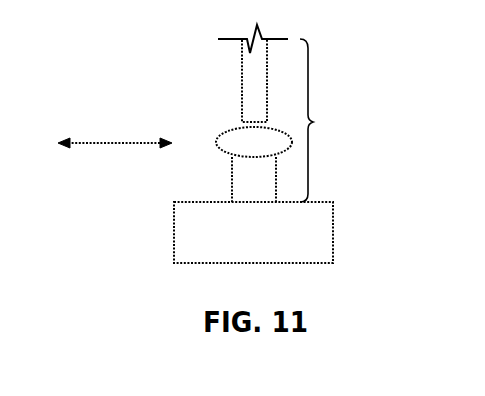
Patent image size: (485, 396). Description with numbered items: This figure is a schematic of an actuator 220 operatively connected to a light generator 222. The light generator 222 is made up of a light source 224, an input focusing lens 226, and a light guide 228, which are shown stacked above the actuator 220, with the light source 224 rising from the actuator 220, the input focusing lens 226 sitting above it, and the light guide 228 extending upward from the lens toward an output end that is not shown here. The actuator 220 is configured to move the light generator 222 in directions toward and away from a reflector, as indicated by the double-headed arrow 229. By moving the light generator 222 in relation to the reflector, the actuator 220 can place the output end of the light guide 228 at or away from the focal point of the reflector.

The actuator 220 is at (333, 232).
The light generator 222 is at (293, 113).
The light source 224 is at (244, 191).
The input focusing lens 226 is at (232, 130).
The light guide 228 is at (242, 58).
The arrow 229 is at (115, 144).